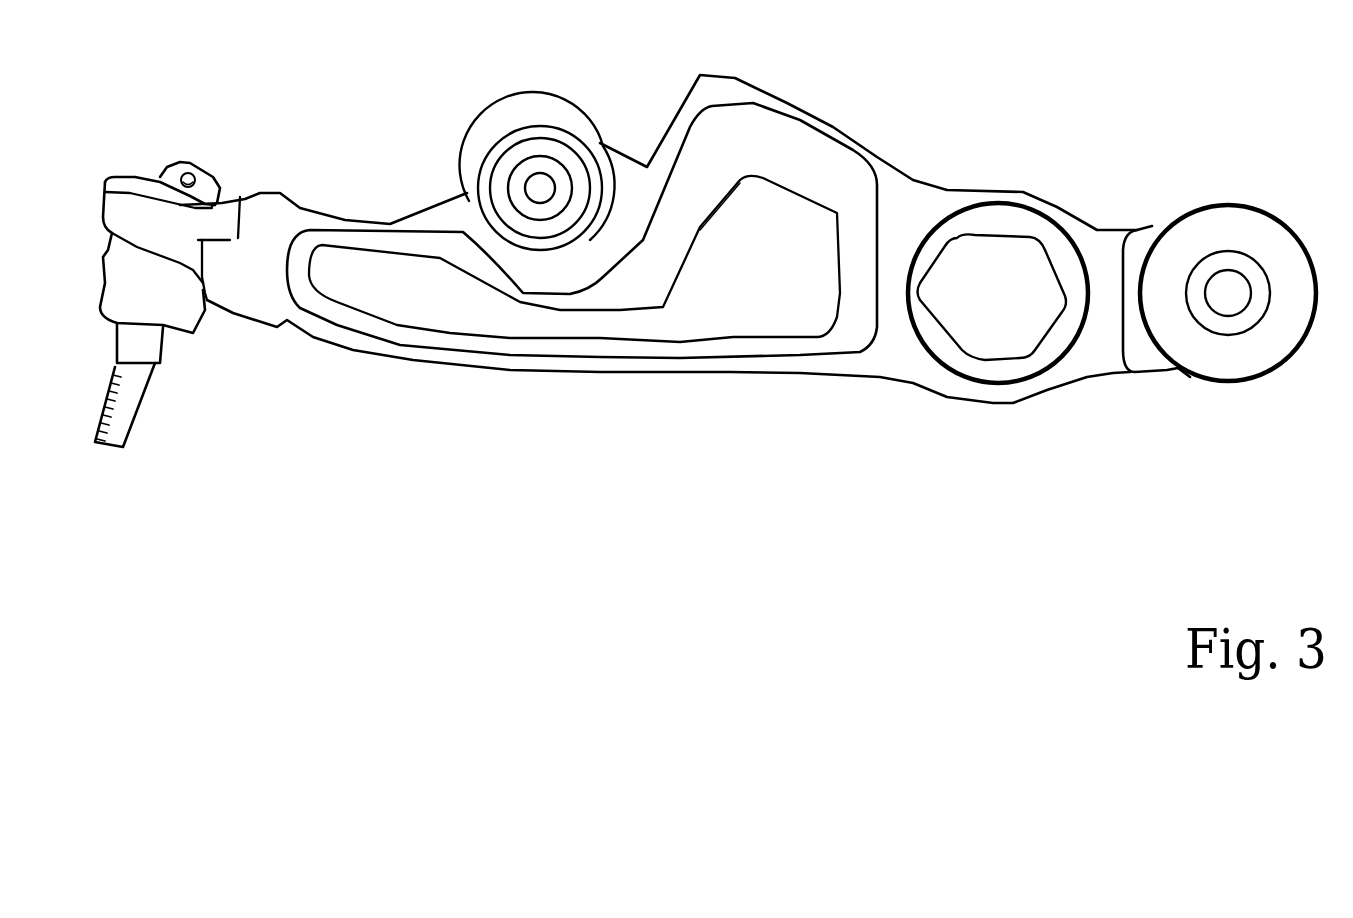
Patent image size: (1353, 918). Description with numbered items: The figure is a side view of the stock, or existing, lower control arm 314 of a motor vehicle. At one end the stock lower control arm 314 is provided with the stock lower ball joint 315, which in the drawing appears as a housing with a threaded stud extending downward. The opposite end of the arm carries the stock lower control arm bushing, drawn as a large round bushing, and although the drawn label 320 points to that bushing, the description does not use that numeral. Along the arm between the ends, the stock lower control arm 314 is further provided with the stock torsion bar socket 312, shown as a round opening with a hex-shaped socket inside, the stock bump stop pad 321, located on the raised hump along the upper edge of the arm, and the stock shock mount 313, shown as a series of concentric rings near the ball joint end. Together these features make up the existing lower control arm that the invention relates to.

The stock torsion bar socket 312 is at (1000, 297).
The stock shock mount 313 is at (538, 187).
The stock lower control arm 314 is at (767, 277).
The stock lower ball joint 315 is at (129, 392).
The bushing 320 is at (1228, 293).
The stock bump stop pad 321 is at (810, 104).